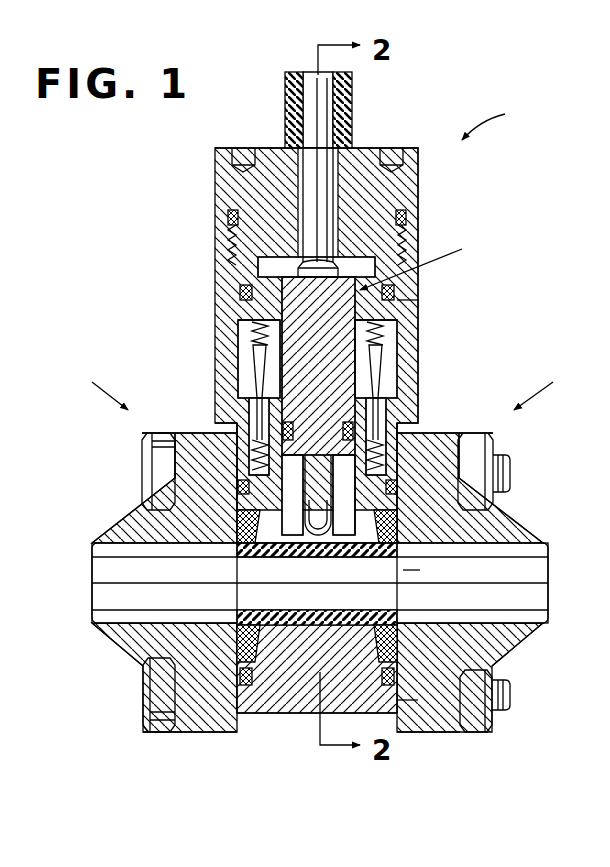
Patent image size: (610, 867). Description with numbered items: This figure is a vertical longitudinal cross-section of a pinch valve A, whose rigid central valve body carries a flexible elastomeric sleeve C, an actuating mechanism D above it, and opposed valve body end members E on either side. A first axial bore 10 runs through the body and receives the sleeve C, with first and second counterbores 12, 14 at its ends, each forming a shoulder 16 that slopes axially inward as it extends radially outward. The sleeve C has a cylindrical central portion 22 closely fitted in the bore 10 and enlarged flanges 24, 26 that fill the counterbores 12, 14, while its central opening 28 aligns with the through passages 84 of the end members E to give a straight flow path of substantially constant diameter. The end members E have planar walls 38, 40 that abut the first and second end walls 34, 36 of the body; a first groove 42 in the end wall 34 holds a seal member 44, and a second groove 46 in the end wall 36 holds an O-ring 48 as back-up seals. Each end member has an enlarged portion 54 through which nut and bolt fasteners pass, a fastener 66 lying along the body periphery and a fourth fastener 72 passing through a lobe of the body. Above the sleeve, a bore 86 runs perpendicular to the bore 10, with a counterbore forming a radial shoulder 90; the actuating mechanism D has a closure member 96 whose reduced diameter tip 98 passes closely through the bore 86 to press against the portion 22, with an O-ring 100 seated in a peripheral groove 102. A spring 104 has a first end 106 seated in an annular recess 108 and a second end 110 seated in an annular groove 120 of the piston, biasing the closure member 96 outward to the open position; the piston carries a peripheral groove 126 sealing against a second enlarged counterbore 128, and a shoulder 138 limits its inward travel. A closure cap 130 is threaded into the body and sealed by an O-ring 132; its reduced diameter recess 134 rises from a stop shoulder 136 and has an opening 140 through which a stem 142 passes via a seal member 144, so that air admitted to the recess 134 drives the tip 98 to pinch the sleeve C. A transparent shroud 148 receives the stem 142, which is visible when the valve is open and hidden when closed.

The first axial bore 10 is at (358, 624).
The first counterbore 12 is at (246, 523).
The second counterbore 14 is at (386, 523).
The shoulder 16 is at (245, 549).
The cylindrical central portion 22 is at (276, 626).
The flange 24 is at (247, 641).
The flange 26 is at (387, 640).
The central opening 28 is at (288, 553).
The first end wall 34 is at (237, 704).
The second end wall 36 is at (415, 722).
The planar wall 38 is at (245, 703).
The planar wall 40 is at (405, 704).
The first groove 42 is at (240, 489).
The seal member 44 is at (245, 676).
The second groove 46 is at (396, 489).
The O-ring 48 is at (388, 676).
The enlarged portion 54 is at (195, 460).
The fastener 66 is at (150, 438).
The fourth fastener 72 is at (150, 680).
The through passage 84 is at (143, 613).
The bore 86 is at (344, 553).
The radial shoulder 90 is at (265, 553).
The closure member 96 is at (325, 357).
The reduced diameter tip 98 is at (382, 553).
The O-ring 100 is at (372, 358).
The peripheral groove 102 is at (340, 378).
The spring 104 is at (245, 358).
The first end of spring 106 is at (400, 432).
The annular recess 108 is at (235, 446).
The second end of spring 110 is at (400, 303).
The annular groove 120 is at (250, 326).
The peripheral groove 126 is at (243, 293).
The second enlarged counterbore 128 is at (250, 360).
The closure cap 130 is at (403, 178).
The O-ring 132 is at (230, 220).
The reduced diameter recess 134 is at (300, 278).
The stop shoulder 136 is at (262, 275).
The shoulder 138 is at (383, 366).
The opening 140 is at (307, 192).
The stem 142 is at (306, 124).
The seal member 144 is at (402, 216).
The transparent shroud 148 is at (350, 124).
The pinch valve A is at (492, 122).
The flexible elastomeric sleeve C is at (420, 574).
The actuating mechanism D is at (420, 265).
The valve body end member E is at (321, 390).